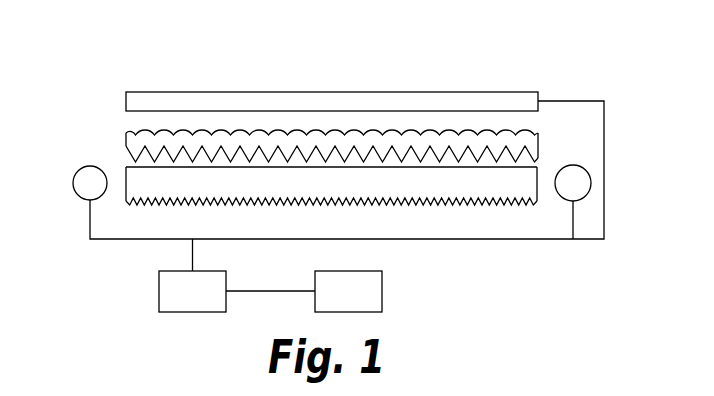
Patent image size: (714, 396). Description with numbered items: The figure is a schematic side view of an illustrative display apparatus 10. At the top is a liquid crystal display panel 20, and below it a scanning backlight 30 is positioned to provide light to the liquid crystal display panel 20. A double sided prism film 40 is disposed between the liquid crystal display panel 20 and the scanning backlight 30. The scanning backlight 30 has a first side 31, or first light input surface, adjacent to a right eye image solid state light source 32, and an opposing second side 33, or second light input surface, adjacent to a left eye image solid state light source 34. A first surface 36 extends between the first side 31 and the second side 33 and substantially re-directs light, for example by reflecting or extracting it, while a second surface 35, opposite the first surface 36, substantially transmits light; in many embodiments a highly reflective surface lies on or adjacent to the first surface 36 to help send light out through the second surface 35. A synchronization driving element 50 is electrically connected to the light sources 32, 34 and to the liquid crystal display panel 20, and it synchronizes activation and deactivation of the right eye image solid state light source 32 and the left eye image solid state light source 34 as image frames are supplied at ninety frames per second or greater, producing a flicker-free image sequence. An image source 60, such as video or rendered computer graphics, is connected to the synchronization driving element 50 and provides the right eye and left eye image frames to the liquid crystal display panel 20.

The display apparatus 10 is at (466, 64).
The liquid crystal display panel 20 is at (136, 97).
The scanning backlight 30 is at (314, 181).
The first side 31 is at (538, 196).
The right eye image solid state light source 32 is at (580, 180).
The second side 33 is at (126, 194).
The left eye image solid state light source 34 is at (84, 182).
The second surface 35 is at (532, 163).
The first surface 36 is at (380, 202).
The double sided prism film 40 is at (133, 135).
The synchronization driving element 50 is at (168, 293).
The image source 60 is at (373, 292).